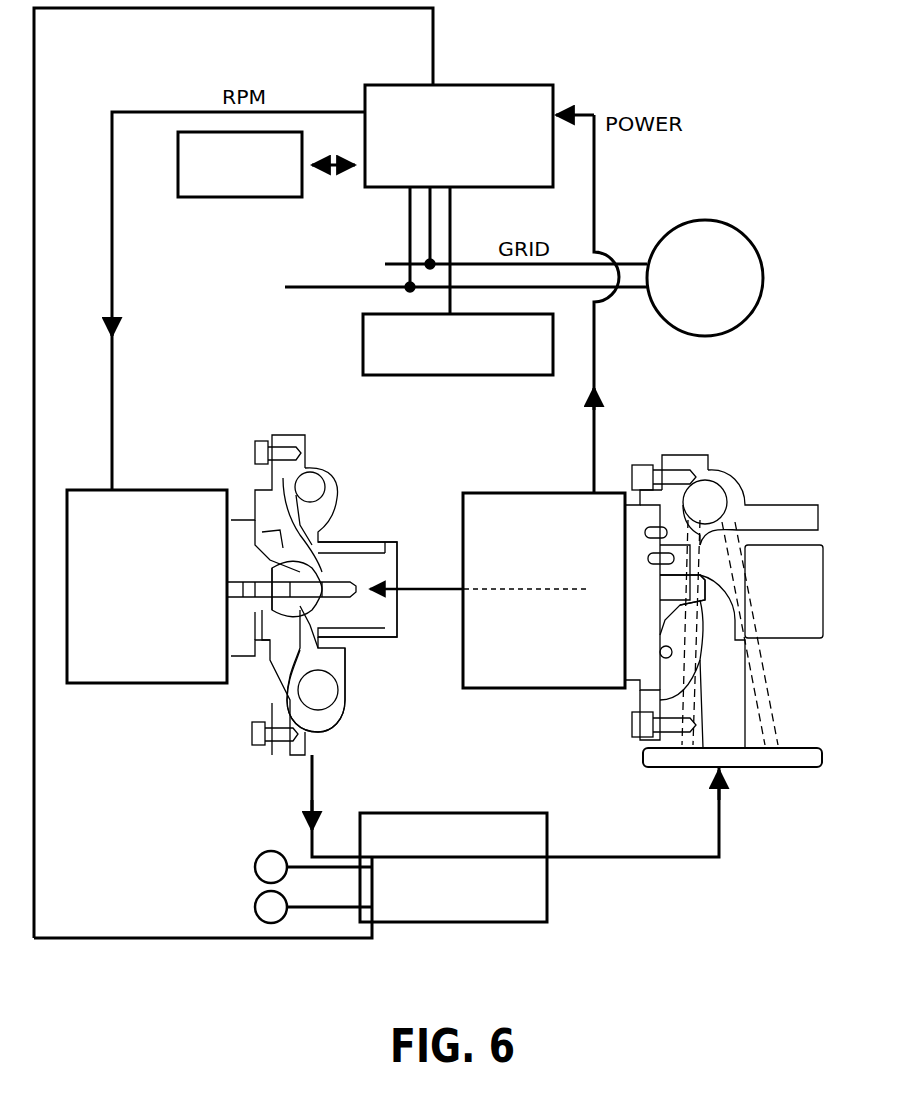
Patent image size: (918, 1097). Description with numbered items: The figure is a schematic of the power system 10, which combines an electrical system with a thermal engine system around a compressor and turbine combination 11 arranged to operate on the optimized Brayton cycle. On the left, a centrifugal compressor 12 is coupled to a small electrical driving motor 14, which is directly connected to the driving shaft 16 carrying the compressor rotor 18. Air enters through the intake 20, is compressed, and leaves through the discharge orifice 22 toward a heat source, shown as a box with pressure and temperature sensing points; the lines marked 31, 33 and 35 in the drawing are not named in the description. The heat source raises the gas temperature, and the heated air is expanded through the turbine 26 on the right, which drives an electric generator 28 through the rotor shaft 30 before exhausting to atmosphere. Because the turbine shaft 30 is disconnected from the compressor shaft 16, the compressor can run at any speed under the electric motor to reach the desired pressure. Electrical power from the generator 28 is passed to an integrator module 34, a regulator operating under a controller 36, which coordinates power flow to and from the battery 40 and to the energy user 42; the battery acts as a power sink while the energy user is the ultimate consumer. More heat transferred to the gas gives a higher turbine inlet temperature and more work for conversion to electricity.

The power system 10 is at (648, 212).
The compressor and turbine combination 11 is at (438, 716).
The centrifugal compressor 12 is at (293, 432).
The electrical driving motor 14 is at (155, 488).
The driving shaft 16 is at (237, 637).
The compressor rotor 18 is at (330, 560).
The intake 20 is at (398, 545).
The discharge orifice 22 is at (345, 700).
The turbine 26 is at (735, 482).
The electric generator 28 is at (478, 492).
The rotor shaft 30 is at (660, 640).
The heat source 31 is at (358, 840).
The temperature sensor 33 is at (255, 900).
The integrator module 34 is at (385, 188).
The pressure sensor 35 is at (255, 858).
The controller 36 is at (362, 328).
The battery 40 is at (250, 198).
The energy user 42 is at (742, 326).